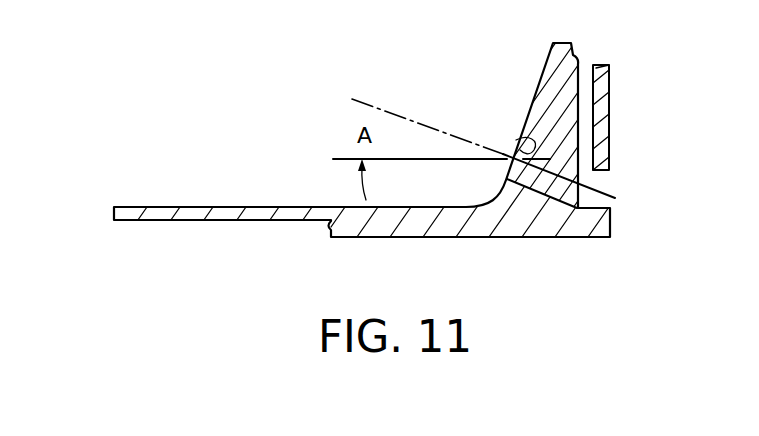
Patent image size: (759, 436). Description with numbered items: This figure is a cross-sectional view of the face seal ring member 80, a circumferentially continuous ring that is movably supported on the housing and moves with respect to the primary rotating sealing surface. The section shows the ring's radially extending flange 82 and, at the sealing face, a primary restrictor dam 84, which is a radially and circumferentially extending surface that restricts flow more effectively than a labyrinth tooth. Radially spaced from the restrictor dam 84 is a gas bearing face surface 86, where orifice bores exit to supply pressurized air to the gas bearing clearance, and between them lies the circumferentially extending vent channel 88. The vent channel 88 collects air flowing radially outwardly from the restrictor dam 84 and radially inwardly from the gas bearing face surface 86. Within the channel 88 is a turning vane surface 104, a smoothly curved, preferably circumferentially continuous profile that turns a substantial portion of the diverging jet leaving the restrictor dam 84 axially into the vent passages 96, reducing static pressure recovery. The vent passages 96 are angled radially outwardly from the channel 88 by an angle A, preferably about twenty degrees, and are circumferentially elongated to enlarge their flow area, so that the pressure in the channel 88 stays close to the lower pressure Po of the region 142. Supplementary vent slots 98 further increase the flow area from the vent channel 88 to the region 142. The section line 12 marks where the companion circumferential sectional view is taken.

The face seal ring member 80 is at (376, 250).
The flange 82 is at (157, 206).
The primary restrictor dam 84 is at (613, 224).
The gas bearing face surface 86 is at (610, 93).
The vent channel 88 is at (595, 198).
The vent passages 96 is at (514, 143).
The supplementary vent slots 98 is at (581, 69).
The turning vane surface 104 is at (588, 159).
The region 142 is at (325, 97).
The section line 12- 12 is at (430, 15).